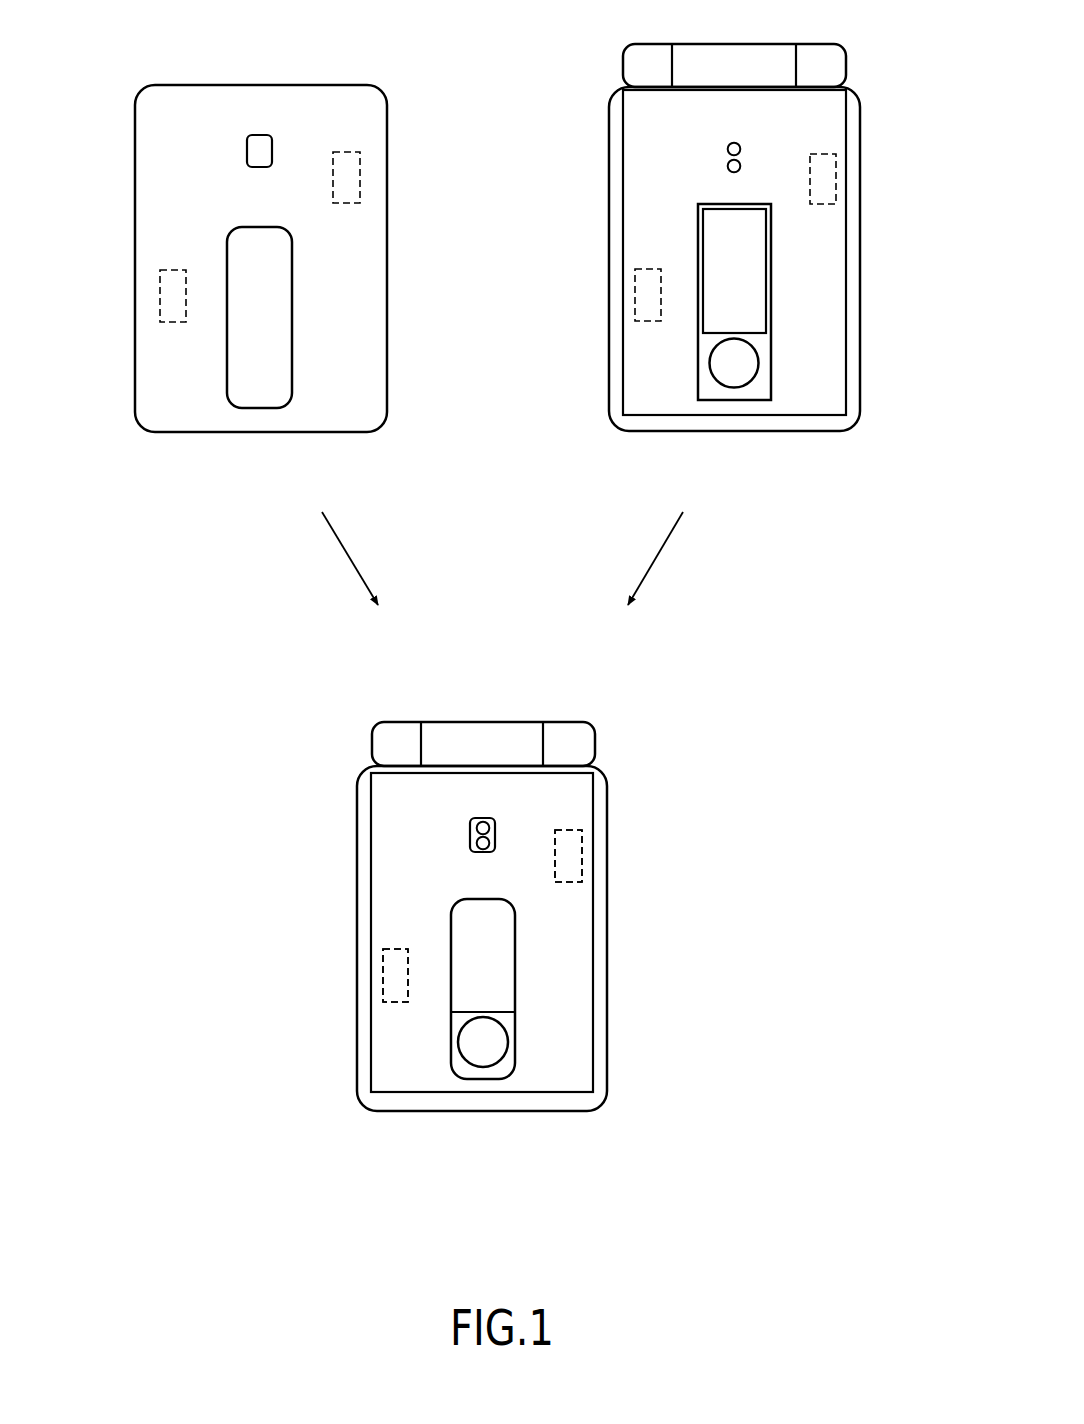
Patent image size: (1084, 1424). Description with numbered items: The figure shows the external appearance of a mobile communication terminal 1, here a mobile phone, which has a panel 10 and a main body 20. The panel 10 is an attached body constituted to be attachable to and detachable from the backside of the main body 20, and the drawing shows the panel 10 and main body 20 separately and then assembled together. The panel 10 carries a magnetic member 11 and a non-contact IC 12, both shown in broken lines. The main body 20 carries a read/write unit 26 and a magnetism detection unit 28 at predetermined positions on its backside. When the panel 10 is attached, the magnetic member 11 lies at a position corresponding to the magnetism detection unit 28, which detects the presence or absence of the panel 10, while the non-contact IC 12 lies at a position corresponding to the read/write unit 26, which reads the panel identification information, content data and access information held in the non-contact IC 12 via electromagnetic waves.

The mobile communication terminal 1 is at (670, 703).
The panel 10 is at (393, 52).
The magnetic member 11 is at (159, 304).
The non-contact IC 12 is at (361, 177).
The main body 20 is at (868, 20).
The read/write unit 26 is at (837, 181).
The magnetism detection unit 28 is at (634, 306).